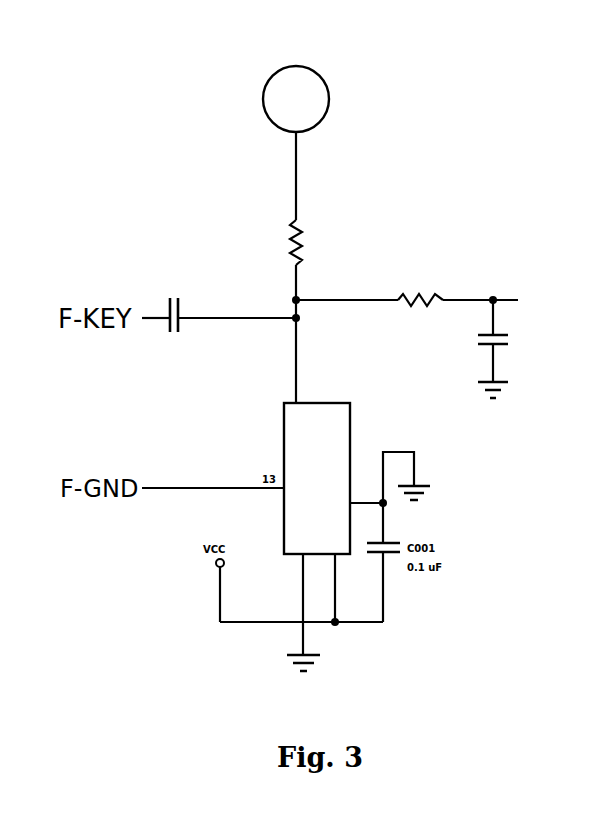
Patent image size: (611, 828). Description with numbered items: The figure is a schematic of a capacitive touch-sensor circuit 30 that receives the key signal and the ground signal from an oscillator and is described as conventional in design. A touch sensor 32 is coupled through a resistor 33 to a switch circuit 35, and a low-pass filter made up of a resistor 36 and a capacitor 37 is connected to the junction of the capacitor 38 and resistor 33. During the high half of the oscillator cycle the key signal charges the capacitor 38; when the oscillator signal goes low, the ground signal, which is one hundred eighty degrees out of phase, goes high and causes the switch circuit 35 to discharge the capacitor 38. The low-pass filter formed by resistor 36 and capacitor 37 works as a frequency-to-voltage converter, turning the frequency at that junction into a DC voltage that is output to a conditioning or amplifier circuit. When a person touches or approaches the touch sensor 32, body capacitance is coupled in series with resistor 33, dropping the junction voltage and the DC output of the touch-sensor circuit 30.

The touch-sensor circuit 30 is at (466, 38).
The touch sensor 32 is at (288, 67).
The resistor 33 is at (292, 230).
The switch circuit 35 is at (280, 450).
The resistor 36 is at (440, 294).
The capacitor 37 is at (510, 336).
The capacitor 38 is at (167, 333).